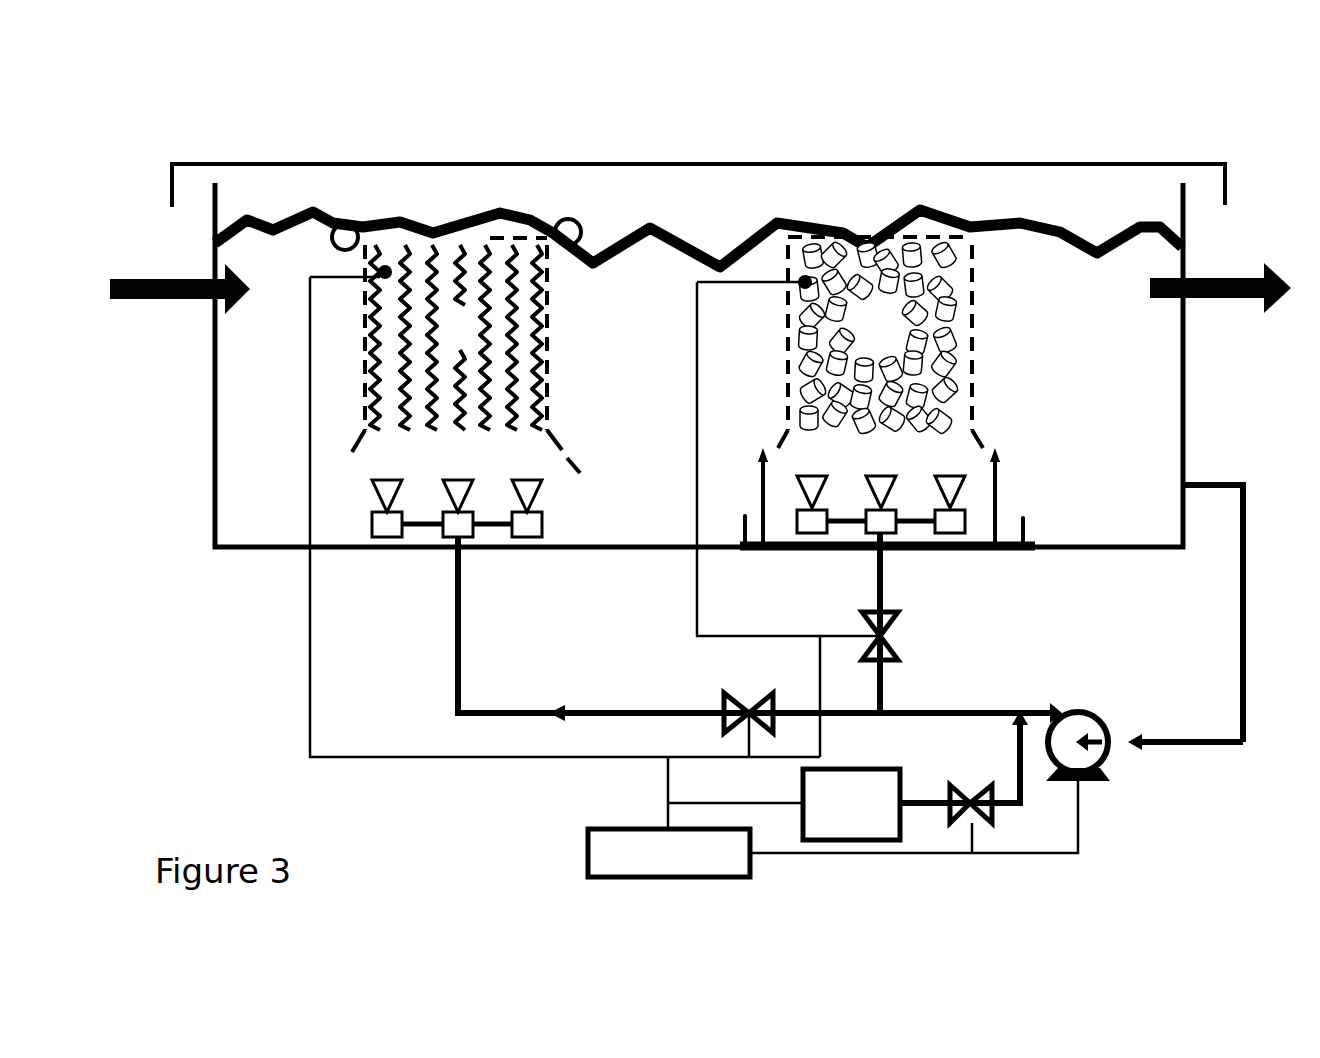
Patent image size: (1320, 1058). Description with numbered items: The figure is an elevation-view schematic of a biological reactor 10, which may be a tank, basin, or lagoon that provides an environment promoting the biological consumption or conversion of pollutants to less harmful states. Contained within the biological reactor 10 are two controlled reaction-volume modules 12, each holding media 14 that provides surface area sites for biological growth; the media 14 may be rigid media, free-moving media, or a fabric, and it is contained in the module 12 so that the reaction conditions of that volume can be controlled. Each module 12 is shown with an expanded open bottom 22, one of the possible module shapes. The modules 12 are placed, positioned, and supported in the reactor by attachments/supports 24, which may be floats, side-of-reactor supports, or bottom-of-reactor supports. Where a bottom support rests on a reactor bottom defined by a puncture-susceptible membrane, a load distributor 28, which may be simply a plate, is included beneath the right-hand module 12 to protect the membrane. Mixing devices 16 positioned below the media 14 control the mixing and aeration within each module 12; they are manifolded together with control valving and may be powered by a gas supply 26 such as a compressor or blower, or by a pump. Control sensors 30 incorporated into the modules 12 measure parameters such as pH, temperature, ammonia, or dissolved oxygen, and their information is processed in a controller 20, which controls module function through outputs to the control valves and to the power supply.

The biological reactor 10 is at (323, 122).
The controlled reaction-volume module 12 is at (590, 360).
The media 14 is at (438, 343).
The mixing devices 16 is at (445, 525).
The controller 20 is at (648, 872).
The expanded open bottom 22 is at (338, 462).
The attachments/supports 24 is at (545, 236).
The gas supply 26 is at (835, 822).
The load distributor 28 is at (1023, 518).
The control sensors 30 is at (385, 268).